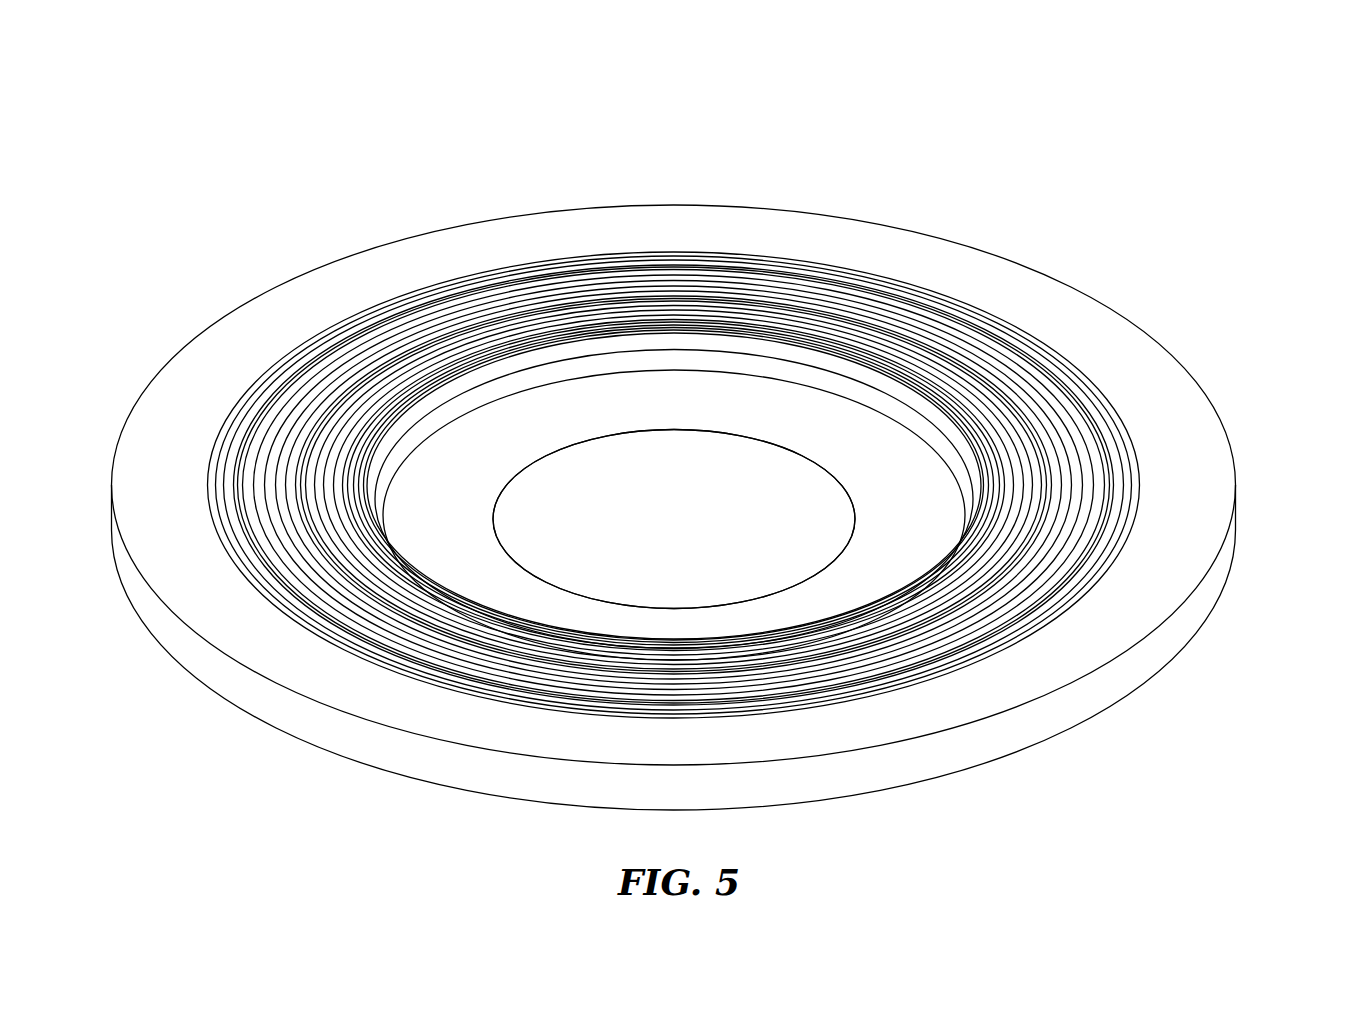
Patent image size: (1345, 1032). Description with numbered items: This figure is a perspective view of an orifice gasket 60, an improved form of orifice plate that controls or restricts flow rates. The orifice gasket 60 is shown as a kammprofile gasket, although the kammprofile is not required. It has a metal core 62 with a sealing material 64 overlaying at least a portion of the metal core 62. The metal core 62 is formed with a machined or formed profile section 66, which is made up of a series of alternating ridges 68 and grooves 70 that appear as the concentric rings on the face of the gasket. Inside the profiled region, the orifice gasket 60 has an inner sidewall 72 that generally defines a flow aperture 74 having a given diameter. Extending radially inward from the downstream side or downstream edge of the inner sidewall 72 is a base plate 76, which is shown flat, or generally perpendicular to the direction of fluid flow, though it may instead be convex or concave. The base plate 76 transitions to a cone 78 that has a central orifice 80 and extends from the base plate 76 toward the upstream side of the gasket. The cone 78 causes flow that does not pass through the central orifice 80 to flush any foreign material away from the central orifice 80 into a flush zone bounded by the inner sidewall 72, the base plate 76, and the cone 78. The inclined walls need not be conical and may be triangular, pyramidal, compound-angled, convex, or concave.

The orifice gasket 60 is at (716, 436).
The metal core 62 is at (1212, 594).
The sealing material 64 is at (1052, 367).
The machined or formed profile section 66 is at (1294, 237).
The ridges 68 is at (240, 397).
The grooves 70 is at (300, 363).
The inner sidewall 72 is at (816, 362).
The flow aperture 74 is at (624, 390).
The base plate 76 is at (674, 515).
The cone 78 is at (674, 519).
The central orifice 80 is at (681, 492).